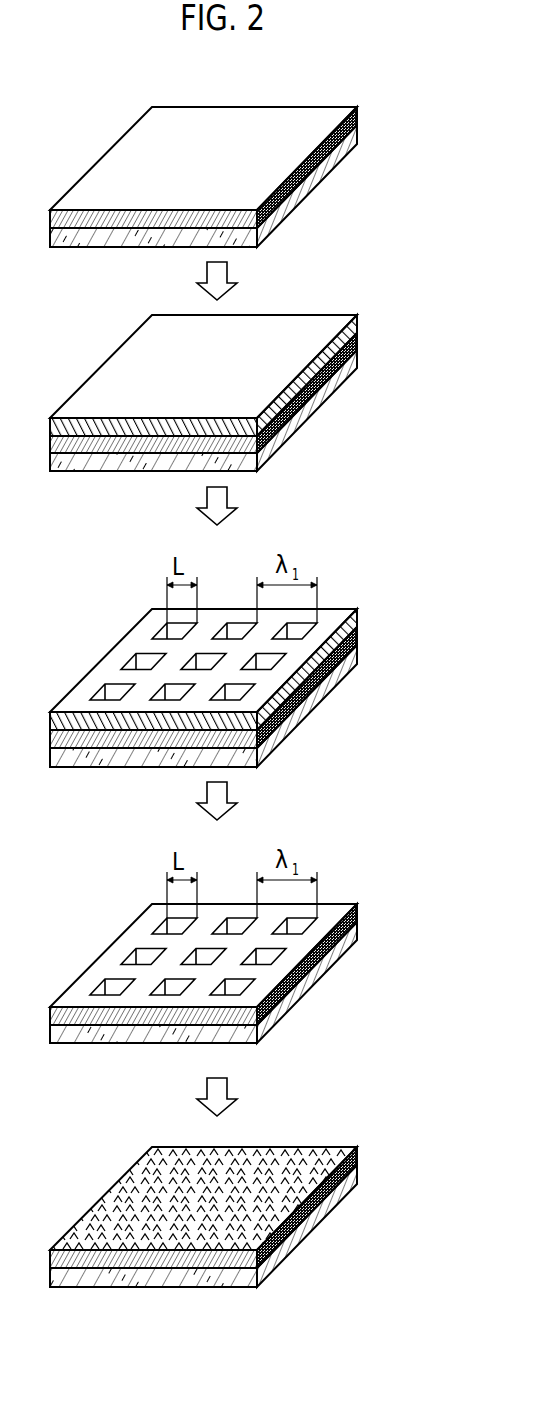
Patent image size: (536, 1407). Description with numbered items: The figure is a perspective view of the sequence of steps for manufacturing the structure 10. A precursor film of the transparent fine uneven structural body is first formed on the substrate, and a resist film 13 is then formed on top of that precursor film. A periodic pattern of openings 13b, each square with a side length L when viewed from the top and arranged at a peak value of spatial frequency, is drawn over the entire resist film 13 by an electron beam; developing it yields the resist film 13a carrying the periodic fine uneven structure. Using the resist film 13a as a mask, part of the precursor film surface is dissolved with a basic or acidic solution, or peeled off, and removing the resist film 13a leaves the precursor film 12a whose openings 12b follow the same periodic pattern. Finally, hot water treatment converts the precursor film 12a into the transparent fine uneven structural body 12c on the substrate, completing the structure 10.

The structure 10 is at (247, 1174).
The precursor film on which periodic fine uneven structure is formed 12a is at (358, 915).
The opening 12b is at (237, 927).
The transparent fine uneven structural body 12c is at (358, 1158).
The resist film 13 is at (358, 325).
The resist film on which periodic fine uneven structure is formed 13a is at (358, 618).
The opening 13b is at (237, 632).